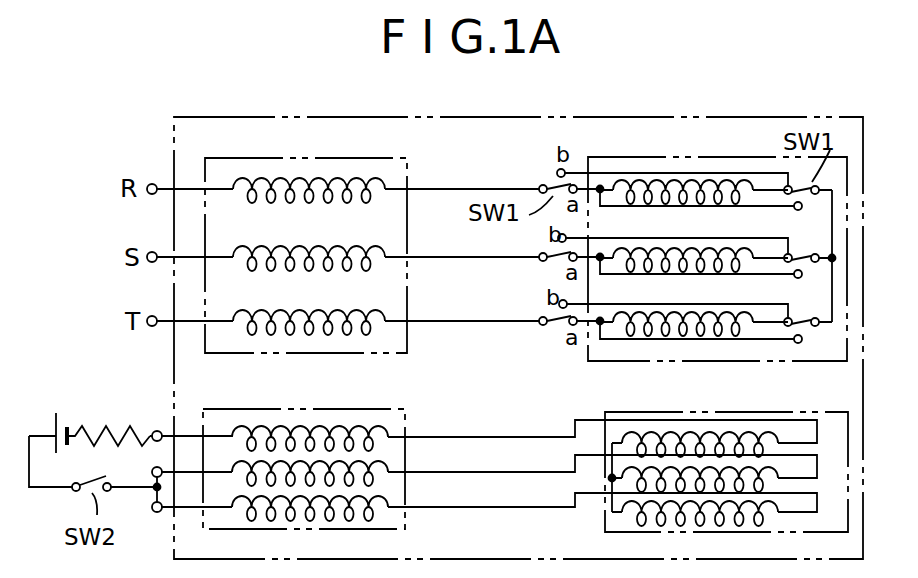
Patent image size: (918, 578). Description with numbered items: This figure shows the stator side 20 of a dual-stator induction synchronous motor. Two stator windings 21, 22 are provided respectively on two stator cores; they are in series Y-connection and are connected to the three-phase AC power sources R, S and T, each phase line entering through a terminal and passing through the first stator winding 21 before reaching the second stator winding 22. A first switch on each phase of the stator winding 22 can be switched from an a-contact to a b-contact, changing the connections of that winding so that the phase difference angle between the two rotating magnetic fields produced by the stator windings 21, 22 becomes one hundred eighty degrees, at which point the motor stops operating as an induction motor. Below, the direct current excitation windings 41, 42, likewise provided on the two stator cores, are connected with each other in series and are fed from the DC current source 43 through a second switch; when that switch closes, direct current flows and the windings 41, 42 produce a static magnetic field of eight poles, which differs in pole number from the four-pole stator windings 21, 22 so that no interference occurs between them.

The stator side arrangement 20 is at (650, 117).
The stator winding 21 is at (410, 178).
The stator winding 22 is at (605, 157).
The direct current excitation winding 41 is at (383, 404).
The direct current excitation winding 42 is at (640, 410).
The DC current source 43 is at (64, 418).